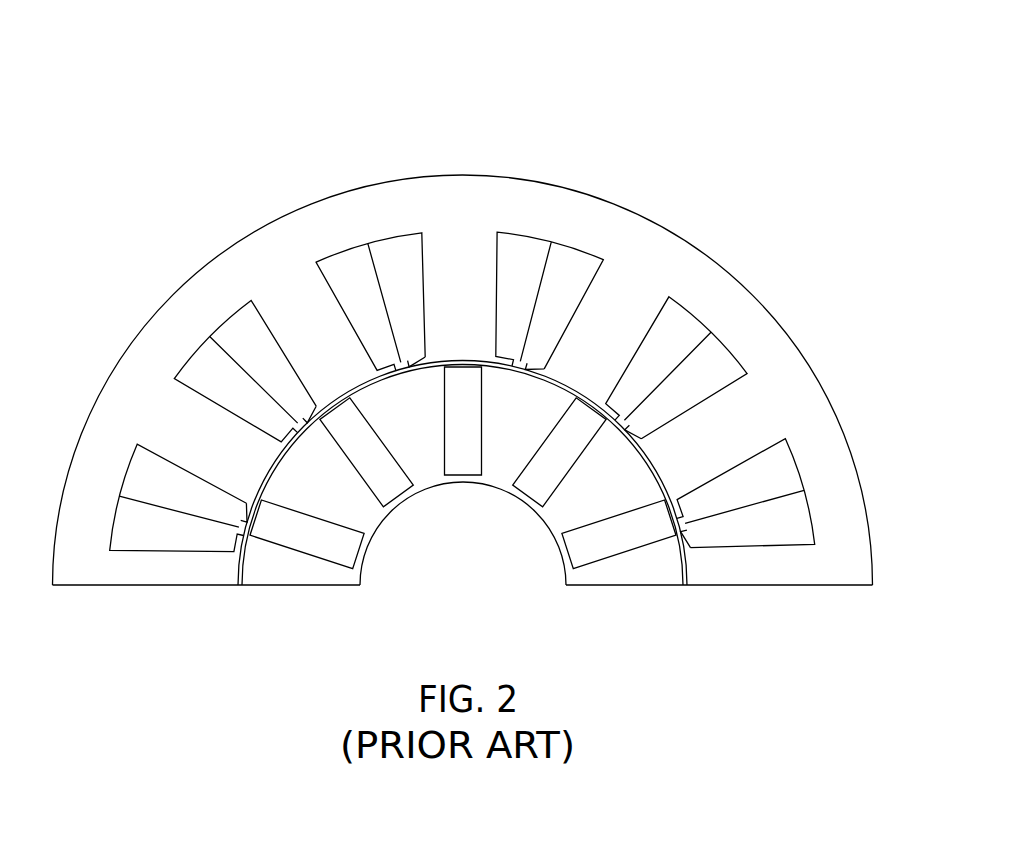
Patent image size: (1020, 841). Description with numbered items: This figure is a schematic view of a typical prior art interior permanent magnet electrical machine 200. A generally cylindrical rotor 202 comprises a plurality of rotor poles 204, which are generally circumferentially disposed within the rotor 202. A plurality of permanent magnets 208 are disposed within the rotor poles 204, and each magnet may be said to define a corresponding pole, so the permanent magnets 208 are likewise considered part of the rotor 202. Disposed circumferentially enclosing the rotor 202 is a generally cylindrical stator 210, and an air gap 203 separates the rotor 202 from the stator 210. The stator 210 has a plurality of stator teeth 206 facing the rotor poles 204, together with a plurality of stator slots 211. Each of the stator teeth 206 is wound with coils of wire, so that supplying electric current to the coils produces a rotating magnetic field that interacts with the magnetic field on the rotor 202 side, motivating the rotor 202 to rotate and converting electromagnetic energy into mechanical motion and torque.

The electrical machine 200 is at (730, 68).
The rotor 202 is at (463, 517).
The air gap 203 is at (686, 586).
The rotor poles 204 is at (584, 523).
The stator teeth 206 is at (499, 334).
The permanent magnets 208 is at (383, 485).
The stator 210 is at (471, 382).
The stator slots 211 is at (710, 383).